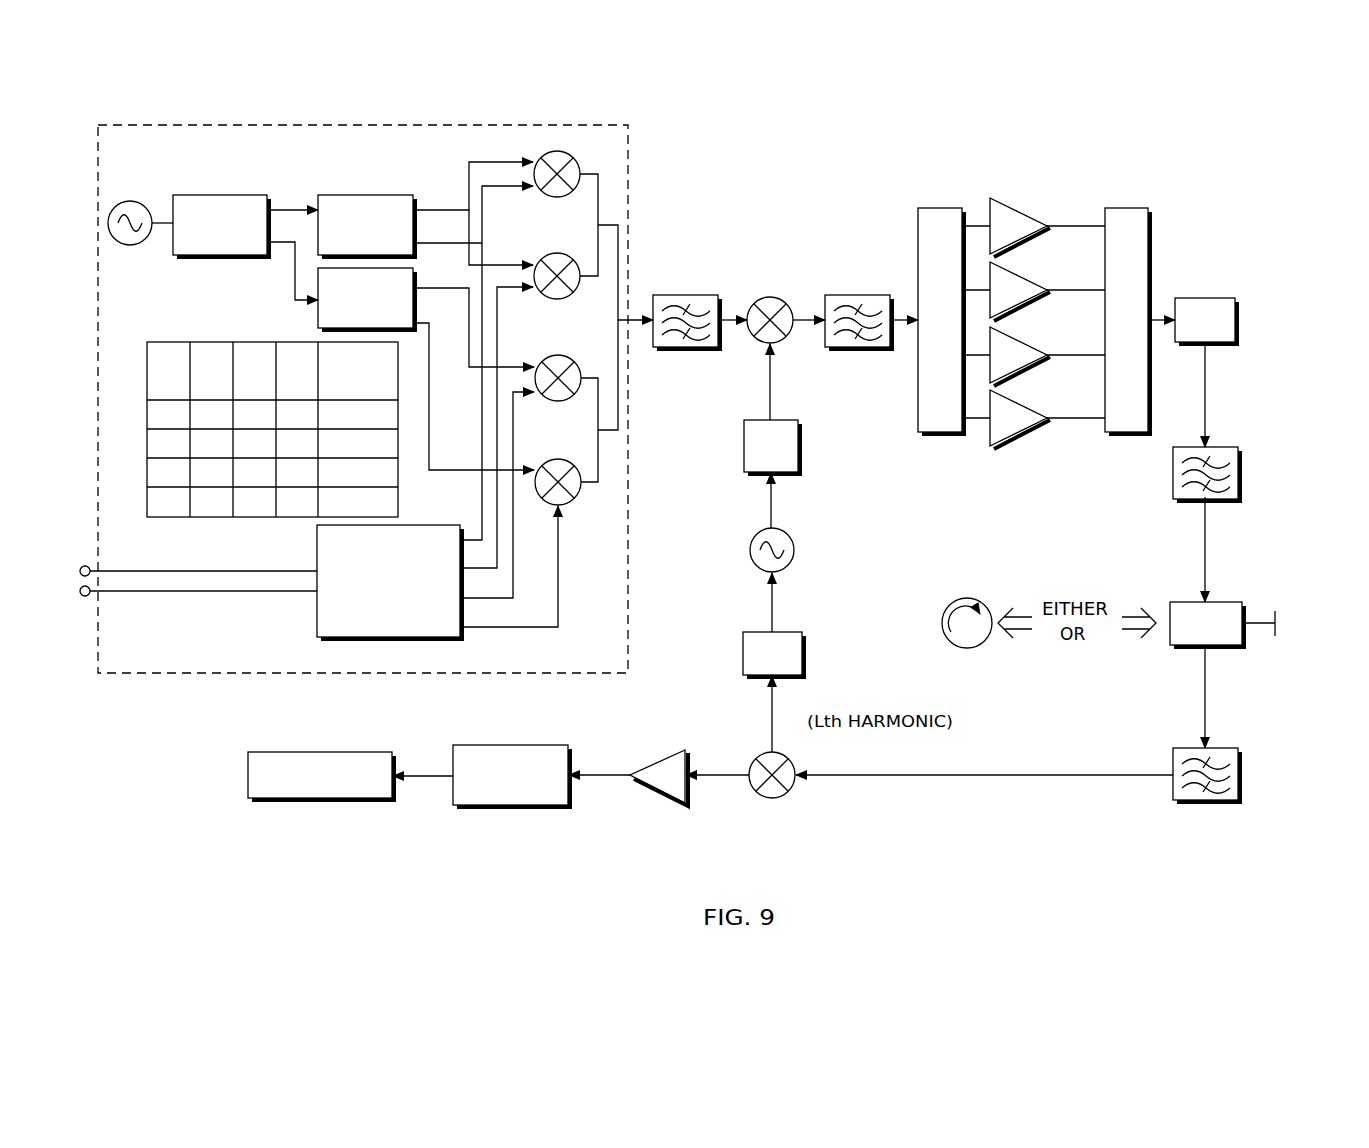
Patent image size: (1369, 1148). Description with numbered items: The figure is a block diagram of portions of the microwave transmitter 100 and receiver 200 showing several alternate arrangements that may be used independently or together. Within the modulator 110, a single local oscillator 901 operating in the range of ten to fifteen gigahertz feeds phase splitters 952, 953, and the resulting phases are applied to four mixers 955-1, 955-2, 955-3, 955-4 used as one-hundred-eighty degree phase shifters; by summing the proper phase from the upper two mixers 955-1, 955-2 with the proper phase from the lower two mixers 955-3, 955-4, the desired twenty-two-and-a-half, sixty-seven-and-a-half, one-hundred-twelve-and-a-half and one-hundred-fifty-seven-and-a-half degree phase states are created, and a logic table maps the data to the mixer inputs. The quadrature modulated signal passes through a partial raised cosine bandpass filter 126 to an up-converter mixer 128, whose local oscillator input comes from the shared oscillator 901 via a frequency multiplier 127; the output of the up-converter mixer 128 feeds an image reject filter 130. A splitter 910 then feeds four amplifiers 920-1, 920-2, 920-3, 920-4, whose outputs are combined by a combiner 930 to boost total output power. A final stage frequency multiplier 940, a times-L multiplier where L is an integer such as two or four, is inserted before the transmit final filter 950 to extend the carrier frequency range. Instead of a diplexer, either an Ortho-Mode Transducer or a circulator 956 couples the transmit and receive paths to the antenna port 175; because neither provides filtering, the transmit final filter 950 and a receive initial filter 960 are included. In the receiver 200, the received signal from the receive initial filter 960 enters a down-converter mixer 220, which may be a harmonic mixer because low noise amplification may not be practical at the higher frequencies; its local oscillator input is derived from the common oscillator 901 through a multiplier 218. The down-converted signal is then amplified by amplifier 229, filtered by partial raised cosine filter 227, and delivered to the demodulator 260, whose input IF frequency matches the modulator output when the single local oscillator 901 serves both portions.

The local oscillator 901 is at (188, 195).
The phase splitter 952 is at (332, 195).
The phase splitter 953 is at (318, 322).
The mixer 955-1 is at (558, 150).
The mixer 955-2 is at (550, 254).
The mixer 955-3 is at (557, 355).
The mixer 955-4 is at (566, 505).
The modulator 110 is at (471, 399).
The partial raised cosine bandpass filter 126 is at (663, 295).
The frequency multiplier 127 is at (743, 442).
The up-converter mixer 128 is at (755, 297).
The image reject filter 130 is at (885, 295).
The splitter 910 is at (932, 222).
The amplifier 920-1 is at (1021, 204).
The amplifier 920-2 is at (1026, 274).
The amplifier 920-3 is at (1026, 339).
The amplifier 920-4 is at (1026, 404).
The combiner 930 is at (1092, 291).
The microwave transmitter 100 is at (1032, 287).
The frequency multiplier 940 is at (1238, 317).
The transmit final filter 950 is at (1240, 470).
The antenna port 175 is at (1266, 619).
The circulator 956 is at (965, 598).
The receive initial filter 960 is at (1240, 770).
The microwave receiver 200 is at (735, 777).
The multiplier 218 is at (802, 643).
The down-converter mixer 220 is at (773, 798).
The amplifier 229 is at (652, 757).
The partial cosine filter 227 is at (475, 745).
The demodulator 260 is at (277, 752).